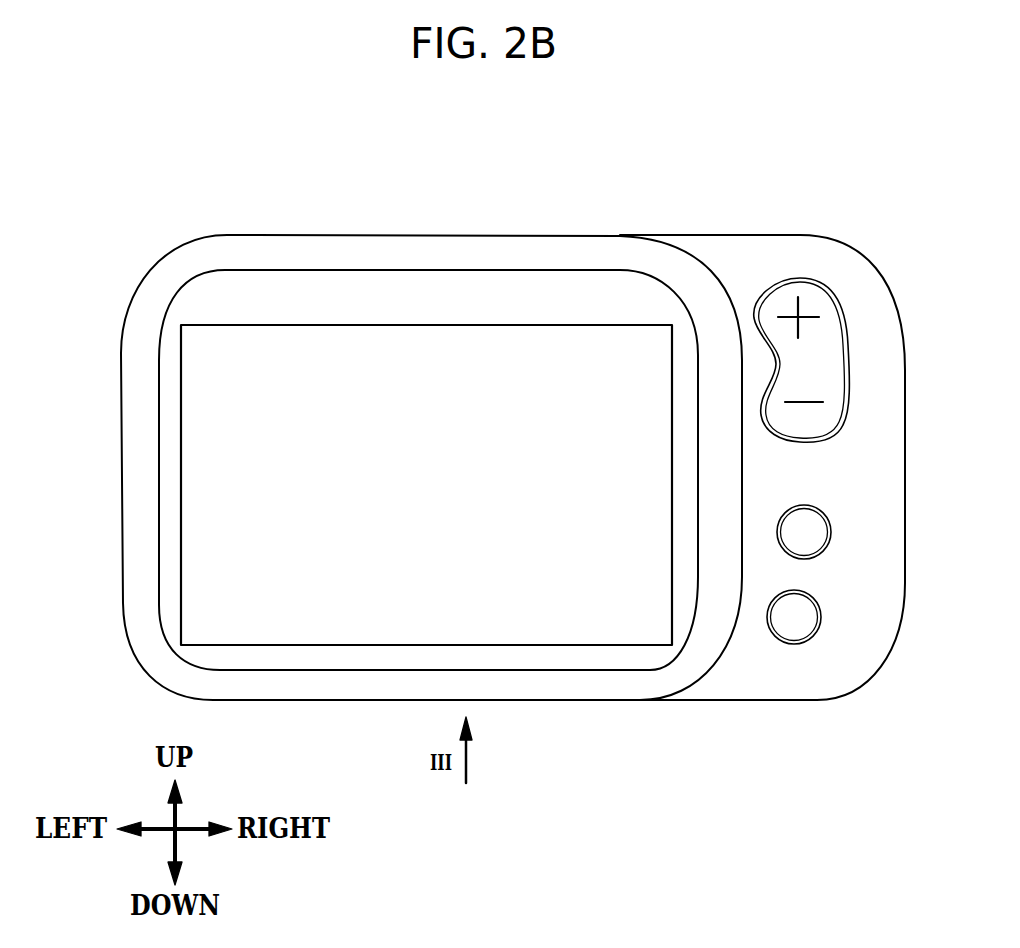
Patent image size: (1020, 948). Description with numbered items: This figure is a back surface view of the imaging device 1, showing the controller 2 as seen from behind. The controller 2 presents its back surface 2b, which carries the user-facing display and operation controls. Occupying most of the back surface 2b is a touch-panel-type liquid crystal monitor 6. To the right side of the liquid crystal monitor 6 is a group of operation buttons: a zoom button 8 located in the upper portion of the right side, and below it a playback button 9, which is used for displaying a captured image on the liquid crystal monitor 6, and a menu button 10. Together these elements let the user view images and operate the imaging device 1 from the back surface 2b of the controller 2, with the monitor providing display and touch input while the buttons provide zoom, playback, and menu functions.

The imaging device 1 is at (618, 182).
The controller 2 is at (676, 236).
The back surface 2b is at (771, 246).
The liquid crystal monitor 6 is at (458, 645).
The zoom button 8 is at (843, 305).
The playback button 9 is at (826, 548).
The menu button 10 is at (808, 640).